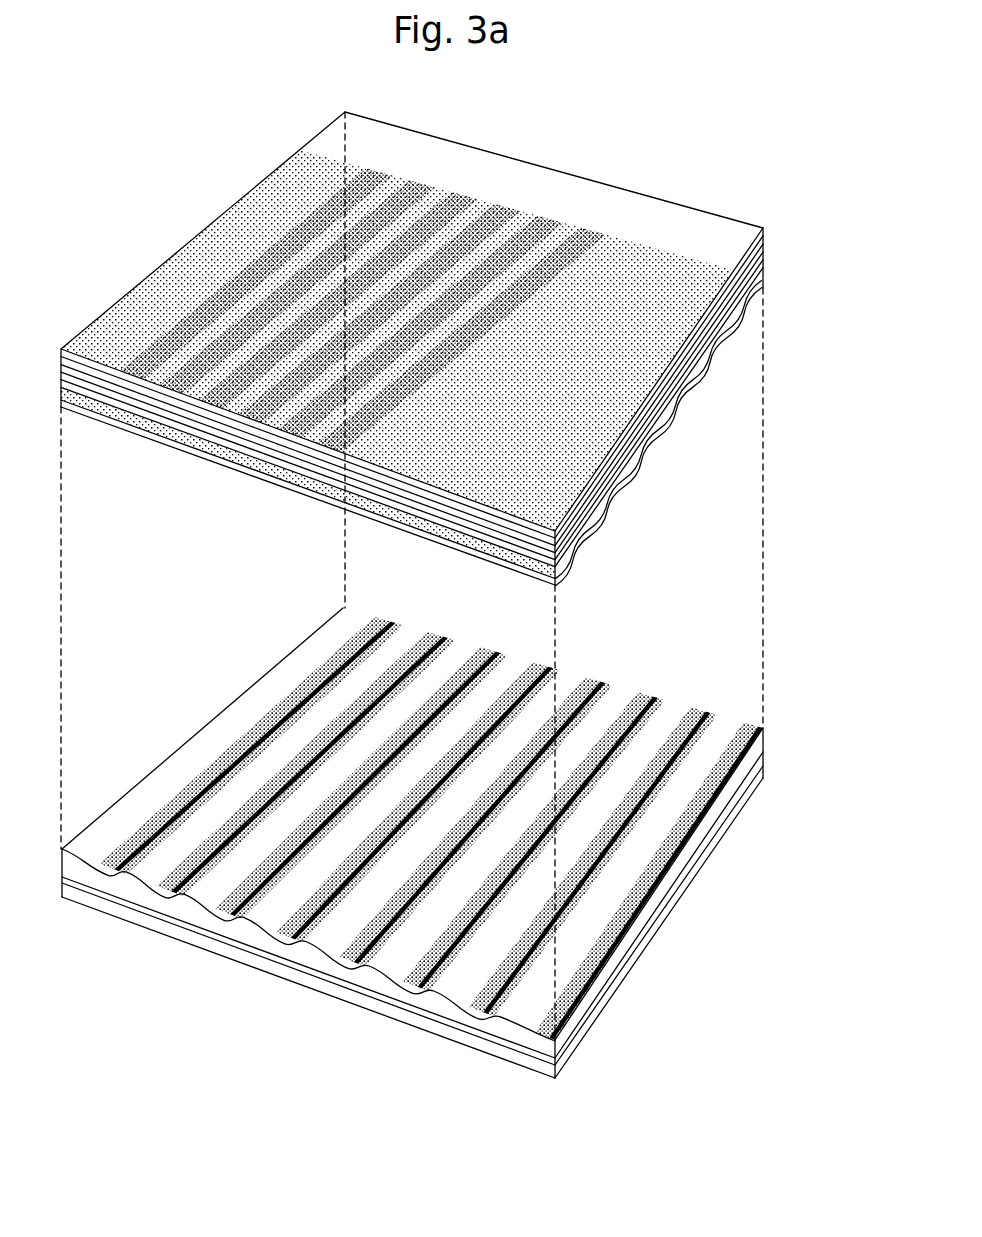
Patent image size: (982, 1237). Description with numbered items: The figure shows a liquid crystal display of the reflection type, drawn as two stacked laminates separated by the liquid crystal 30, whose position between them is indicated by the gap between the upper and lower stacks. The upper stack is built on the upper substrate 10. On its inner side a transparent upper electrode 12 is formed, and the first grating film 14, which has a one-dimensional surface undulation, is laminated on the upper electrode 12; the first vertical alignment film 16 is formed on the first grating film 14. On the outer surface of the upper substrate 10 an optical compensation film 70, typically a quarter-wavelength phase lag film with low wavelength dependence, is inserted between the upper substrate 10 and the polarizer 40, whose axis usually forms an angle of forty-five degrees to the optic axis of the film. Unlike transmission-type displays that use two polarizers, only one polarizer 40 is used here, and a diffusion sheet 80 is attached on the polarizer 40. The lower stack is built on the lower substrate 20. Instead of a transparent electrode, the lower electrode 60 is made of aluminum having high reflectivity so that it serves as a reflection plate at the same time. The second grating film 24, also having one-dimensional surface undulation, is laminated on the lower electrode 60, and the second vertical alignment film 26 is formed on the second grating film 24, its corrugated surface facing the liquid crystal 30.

The diffusion sheet 80 is at (720, 213).
The polarizer 40 is at (763, 232).
The optical compensation film 70 is at (762, 247).
The upper substrate 10 is at (760, 255).
The upper electrode 12 is at (762, 262).
The first grating film 14 is at (760, 278).
The first vertical alignment film 16 is at (758, 288).
The liquid crystal 30 is at (722, 587).
The second vertical alignment film 26 is at (760, 720).
The second grating film 24 is at (762, 753).
The lower electrode 60 is at (763, 763).
The lower substrate 20 is at (765, 775).